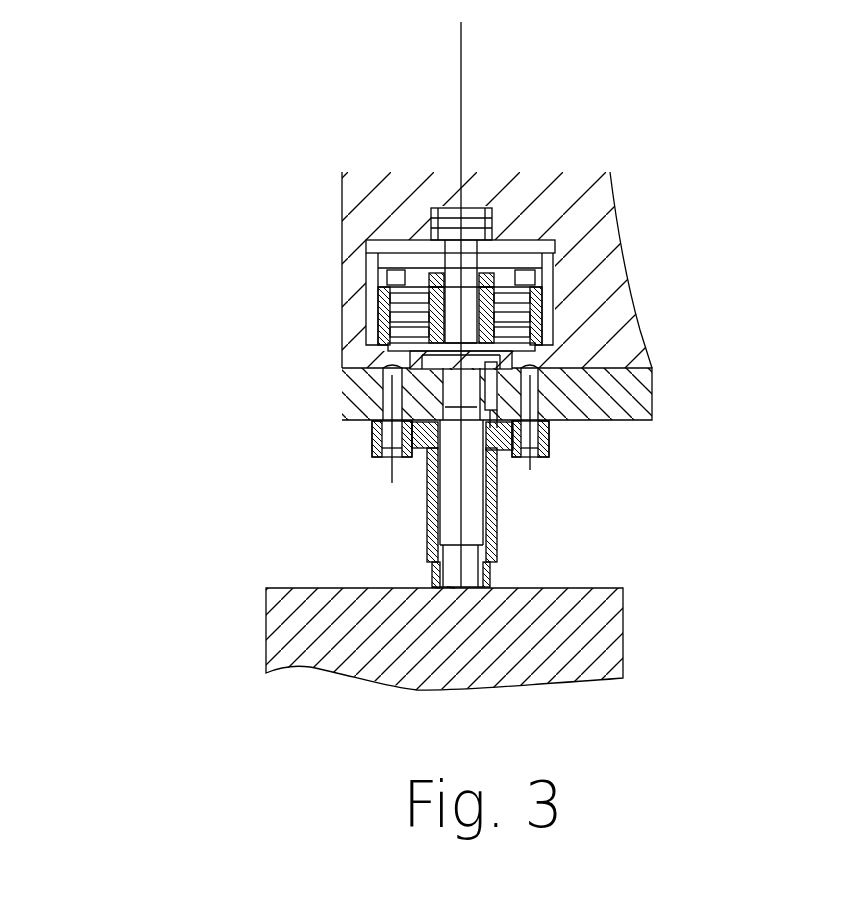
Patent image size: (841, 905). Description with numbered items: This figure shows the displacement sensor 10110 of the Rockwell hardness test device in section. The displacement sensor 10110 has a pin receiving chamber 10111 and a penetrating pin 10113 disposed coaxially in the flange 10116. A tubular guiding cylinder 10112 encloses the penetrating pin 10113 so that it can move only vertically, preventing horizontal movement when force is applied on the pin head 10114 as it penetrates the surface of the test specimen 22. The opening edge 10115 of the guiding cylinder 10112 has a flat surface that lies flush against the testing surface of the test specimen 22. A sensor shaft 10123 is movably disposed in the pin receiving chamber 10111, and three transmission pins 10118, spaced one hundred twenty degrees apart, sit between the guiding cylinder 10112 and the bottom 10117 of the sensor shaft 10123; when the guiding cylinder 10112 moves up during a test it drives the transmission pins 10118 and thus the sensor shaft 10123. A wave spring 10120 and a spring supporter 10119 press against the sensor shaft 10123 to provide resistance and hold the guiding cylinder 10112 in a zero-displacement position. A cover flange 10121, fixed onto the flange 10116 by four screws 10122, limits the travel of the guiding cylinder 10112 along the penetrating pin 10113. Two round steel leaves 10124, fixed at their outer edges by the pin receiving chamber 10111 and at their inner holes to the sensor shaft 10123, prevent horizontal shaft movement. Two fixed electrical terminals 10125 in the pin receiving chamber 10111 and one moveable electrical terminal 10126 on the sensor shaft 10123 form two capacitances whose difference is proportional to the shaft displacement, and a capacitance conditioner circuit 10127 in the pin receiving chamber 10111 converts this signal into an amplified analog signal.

The test specimen 22 is at (600, 654).
The displacement sensor 10110 is at (670, 270).
The pin receiving chamber 10111 is at (542, 240).
The guiding cylinder 10112 is at (427, 522).
The penetrating pin 10113 is at (468, 562).
The pin head 10114 is at (455, 588).
The opening edge 10115 is at (437, 588).
The flange 10116 is at (582, 390).
The bottom of the sensor shaft 10117 is at (490, 357).
The transmission pins 10118 is at (500, 403).
The spring supporter 10119 is at (472, 252).
The wave spring 10120 is at (478, 237).
The cover flange 10121 is at (377, 438).
The screws 10122 is at (383, 428).
The sensor shaft 10123 is at (513, 262).
The round steel leaves 10124 is at (367, 287).
The fixed electrical terminals 10125 is at (380, 330).
The moveable electrical terminal 10126 is at (517, 317).
The capacitance conditioner circuit 10127 is at (392, 266).